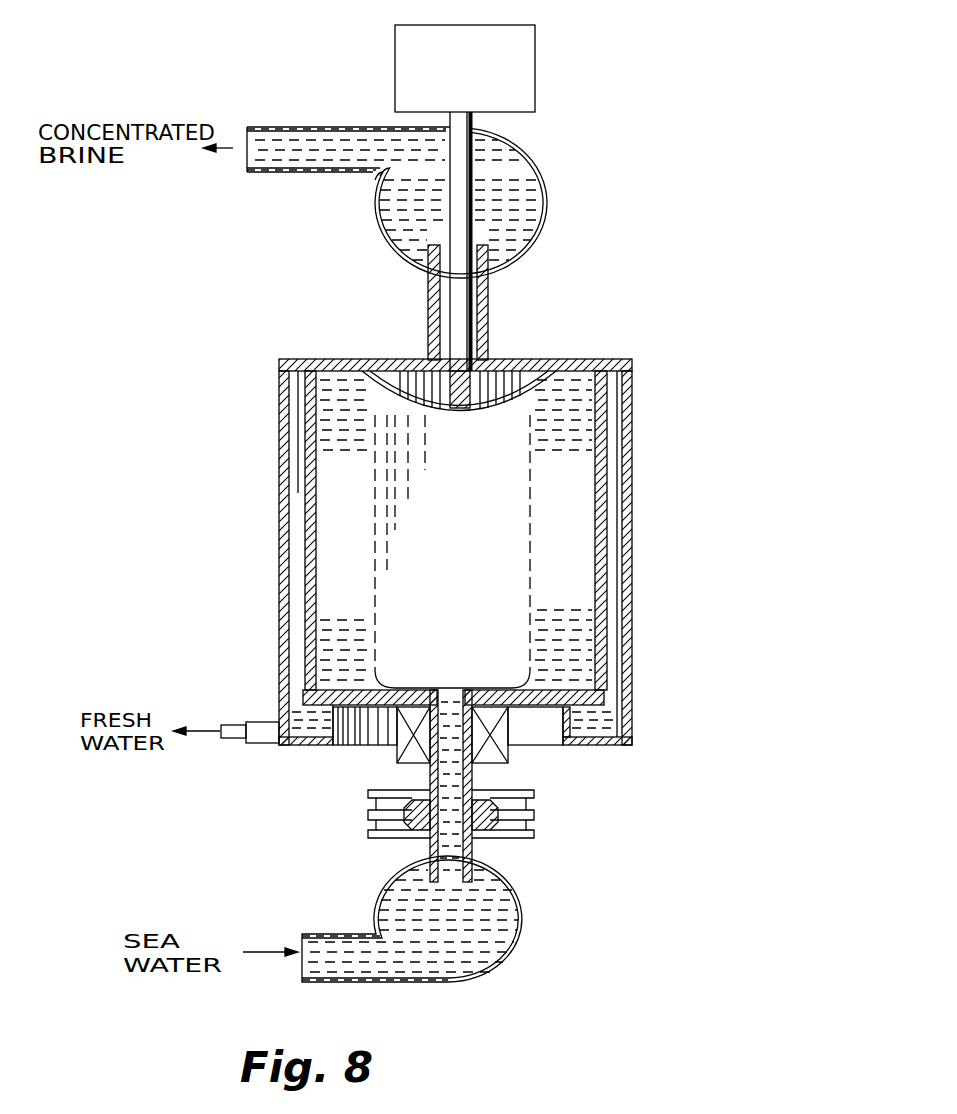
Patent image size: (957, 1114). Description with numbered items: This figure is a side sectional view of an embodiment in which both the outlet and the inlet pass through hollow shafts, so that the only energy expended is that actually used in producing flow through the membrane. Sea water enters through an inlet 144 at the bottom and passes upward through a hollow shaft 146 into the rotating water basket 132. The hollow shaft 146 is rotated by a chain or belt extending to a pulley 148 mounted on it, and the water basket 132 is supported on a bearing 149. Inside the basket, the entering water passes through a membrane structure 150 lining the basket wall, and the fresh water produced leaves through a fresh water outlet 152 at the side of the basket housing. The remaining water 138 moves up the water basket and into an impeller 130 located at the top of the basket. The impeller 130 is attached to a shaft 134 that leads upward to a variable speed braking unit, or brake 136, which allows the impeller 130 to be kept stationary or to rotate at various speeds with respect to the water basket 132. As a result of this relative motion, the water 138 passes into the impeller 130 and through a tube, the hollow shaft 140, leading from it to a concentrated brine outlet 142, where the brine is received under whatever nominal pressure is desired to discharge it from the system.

The impeller 130 is at (513, 373).
The water basket 132 is at (611, 355).
The shaft 134 is at (478, 127).
The brake 136 is at (503, 26).
The water 138 is at (548, 583).
The hollow shaft 140 is at (490, 306).
The concentrated brine outlet 142 is at (285, 127).
The inlet 144 is at (302, 934).
The hollow shaft 146 is at (470, 852).
The pulley 148 is at (513, 798).
The bearing 149 is at (396, 757).
The membrane structure 150 is at (605, 448).
The fresh water outlet 152 is at (260, 722).